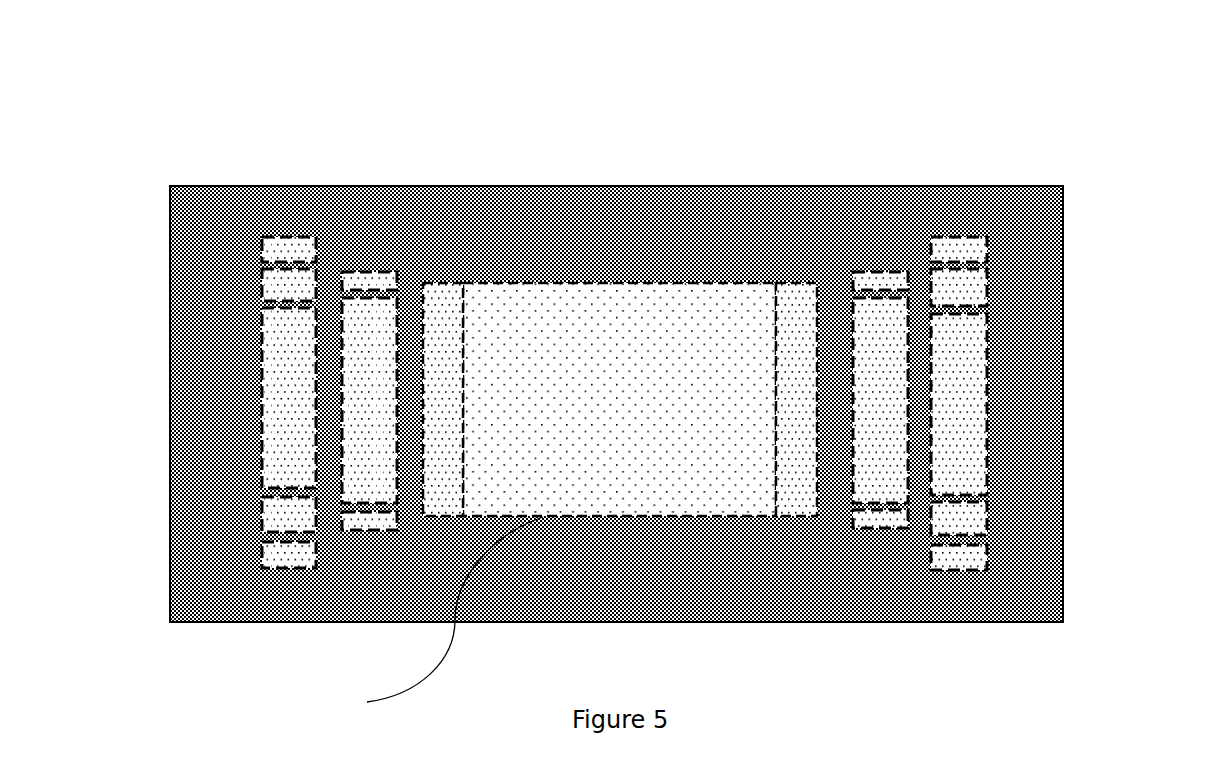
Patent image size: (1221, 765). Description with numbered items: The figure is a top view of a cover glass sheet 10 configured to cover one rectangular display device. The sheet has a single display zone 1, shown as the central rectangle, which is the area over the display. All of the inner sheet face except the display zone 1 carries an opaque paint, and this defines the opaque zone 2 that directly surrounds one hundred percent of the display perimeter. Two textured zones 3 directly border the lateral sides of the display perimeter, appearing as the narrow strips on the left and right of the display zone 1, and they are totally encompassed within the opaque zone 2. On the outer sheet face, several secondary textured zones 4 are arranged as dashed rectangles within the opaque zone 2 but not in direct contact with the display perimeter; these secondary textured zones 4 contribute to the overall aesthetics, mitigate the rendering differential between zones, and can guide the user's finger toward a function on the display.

The cover glass sheet 10 is at (620, 383).
The opaque zone 2 is at (262, 223).
The display zone 1 is at (565, 302).
The textured zone 3 is at (447, 295).
The secondary textured zone 4 is at (897, 327).